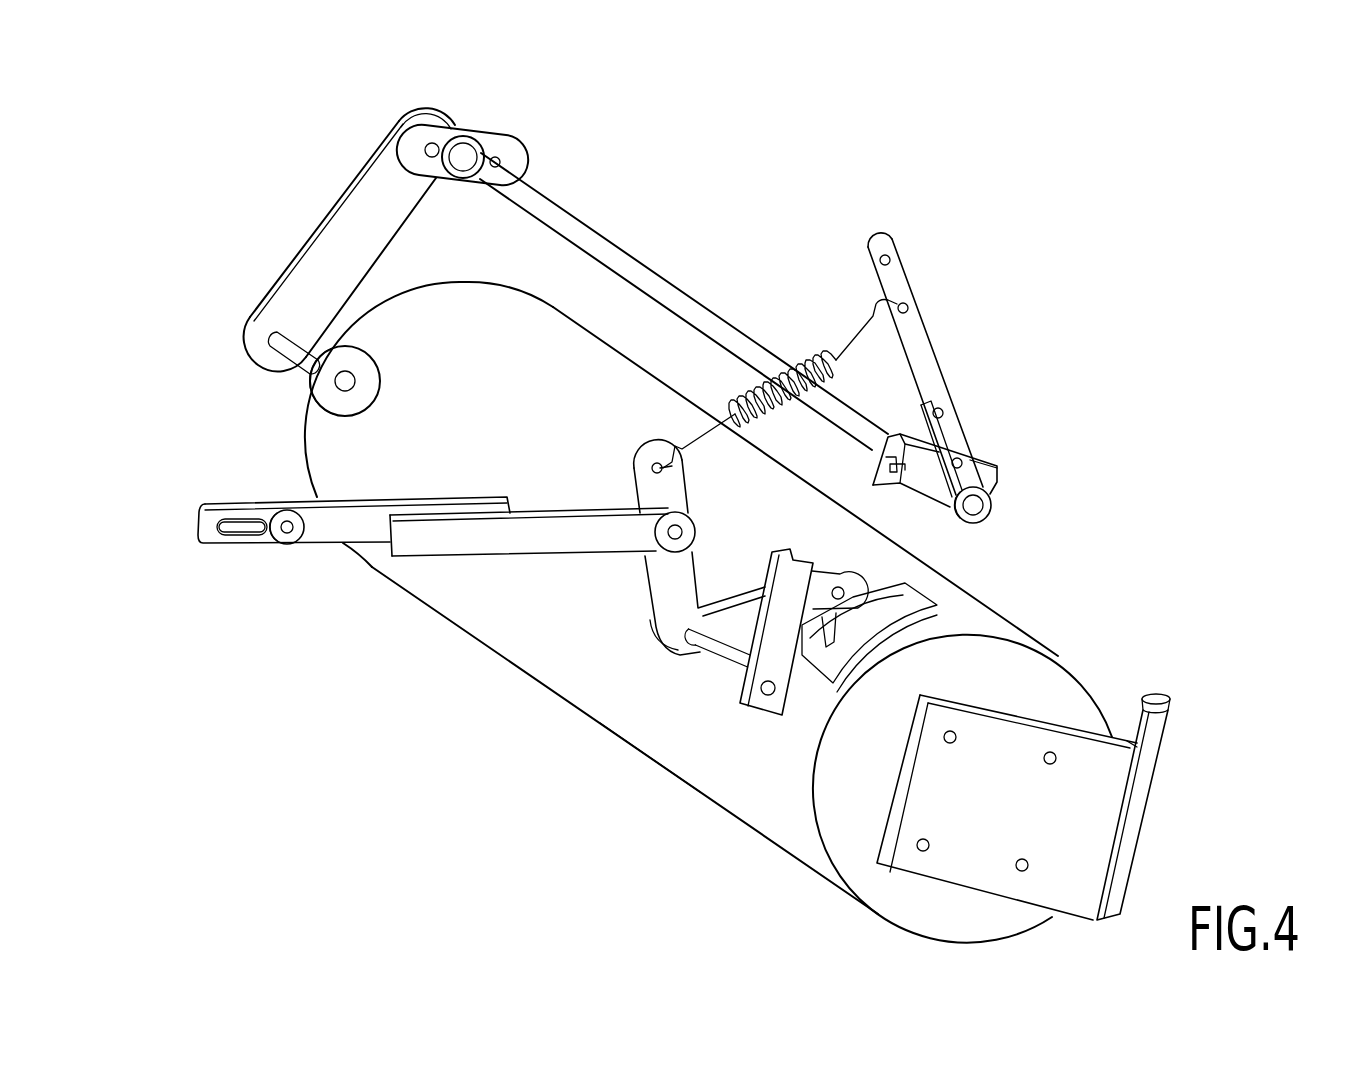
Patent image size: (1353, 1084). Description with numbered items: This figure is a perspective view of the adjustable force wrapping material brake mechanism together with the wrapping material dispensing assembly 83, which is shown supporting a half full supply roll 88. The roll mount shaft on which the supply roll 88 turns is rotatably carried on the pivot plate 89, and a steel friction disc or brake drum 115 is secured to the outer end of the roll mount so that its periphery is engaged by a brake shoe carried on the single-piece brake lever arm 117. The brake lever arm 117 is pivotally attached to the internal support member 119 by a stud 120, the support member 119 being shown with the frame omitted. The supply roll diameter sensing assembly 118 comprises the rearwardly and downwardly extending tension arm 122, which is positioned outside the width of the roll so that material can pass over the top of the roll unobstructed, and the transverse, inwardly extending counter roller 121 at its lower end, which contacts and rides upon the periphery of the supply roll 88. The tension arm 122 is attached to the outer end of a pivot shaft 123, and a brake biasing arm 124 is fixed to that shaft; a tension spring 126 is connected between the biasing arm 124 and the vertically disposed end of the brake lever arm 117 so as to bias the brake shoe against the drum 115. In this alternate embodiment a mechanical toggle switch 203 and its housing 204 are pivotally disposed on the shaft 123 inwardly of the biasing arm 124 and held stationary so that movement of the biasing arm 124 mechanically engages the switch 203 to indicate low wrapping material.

The wrapping material dispensing assembly 83 is at (760, 918).
The supply roll 88 is at (737, 800).
The pivot plate 89 is at (1000, 814).
The brake drum 115 is at (1090, 683).
The brake lever arm 117 is at (683, 648).
The supply roll diameter sensing assembly 118 is at (908, 223).
The internal support member 119 is at (768, 660).
The stud 120 is at (769, 692).
The counter roller 121 is at (290, 400).
The tension arm 122 is at (314, 225).
The pivot shaft 123 is at (638, 267).
The brake biasing arm 124 is at (933, 353).
The tension spring 126 is at (800, 338).
The toggle switch 203 is at (885, 468).
The housing 204 is at (940, 505).